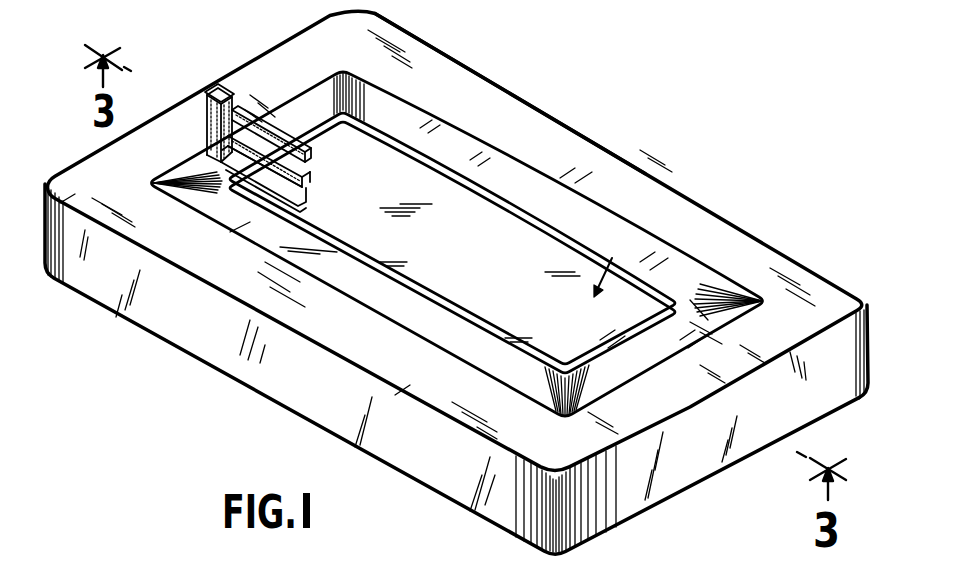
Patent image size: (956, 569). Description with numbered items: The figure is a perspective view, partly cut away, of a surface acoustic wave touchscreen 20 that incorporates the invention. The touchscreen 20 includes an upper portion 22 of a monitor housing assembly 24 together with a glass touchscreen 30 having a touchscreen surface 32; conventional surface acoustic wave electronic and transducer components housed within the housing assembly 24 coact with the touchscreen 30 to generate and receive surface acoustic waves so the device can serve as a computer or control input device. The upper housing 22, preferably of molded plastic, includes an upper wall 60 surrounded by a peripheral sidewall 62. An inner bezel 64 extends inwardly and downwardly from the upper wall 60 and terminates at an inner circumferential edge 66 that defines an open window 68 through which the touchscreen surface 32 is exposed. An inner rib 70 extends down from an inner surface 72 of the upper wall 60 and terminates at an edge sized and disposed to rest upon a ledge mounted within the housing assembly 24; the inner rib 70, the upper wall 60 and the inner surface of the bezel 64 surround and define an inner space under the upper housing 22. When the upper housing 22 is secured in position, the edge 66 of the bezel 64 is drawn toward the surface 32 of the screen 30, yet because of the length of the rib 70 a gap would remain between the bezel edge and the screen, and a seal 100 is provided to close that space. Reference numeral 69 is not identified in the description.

The surface acoustic wave touchscreen 20 is at (575, 95).
The upper portion of monitor housing assembly 22 is at (443, 53).
The monitor housing assembly 24 is at (789, 251).
The glass touchscreen 30 is at (240, 105).
The touchscreen surface 32 is at (477, 279).
The upper wall 60 is at (645, 173).
The peripheral sidewall 62 is at (172, 343).
The inner bezel 64 is at (478, 148).
The inner circumferential edge 66 is at (405, 127).
The open window 68 is at (638, 242).
The flow direction 69 is at (567, 237).
The inner rib 70 is at (203, 112).
The inner surface of upper wall 72 is at (205, 94).
The seal 100 is at (313, 142).